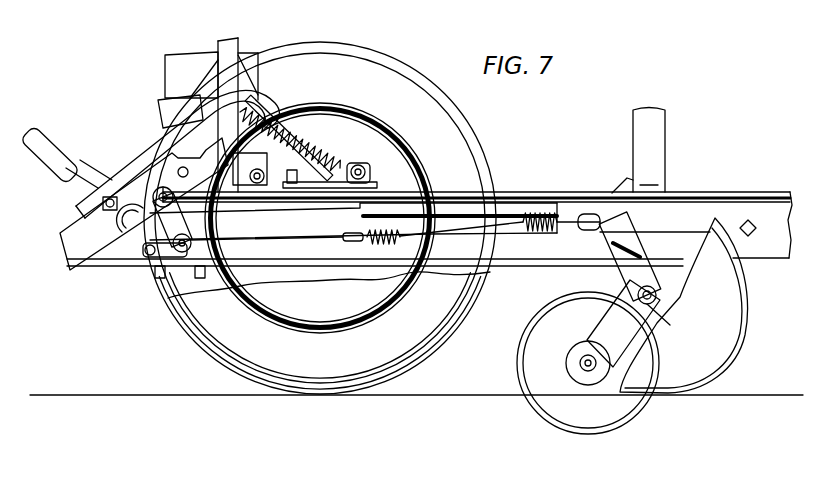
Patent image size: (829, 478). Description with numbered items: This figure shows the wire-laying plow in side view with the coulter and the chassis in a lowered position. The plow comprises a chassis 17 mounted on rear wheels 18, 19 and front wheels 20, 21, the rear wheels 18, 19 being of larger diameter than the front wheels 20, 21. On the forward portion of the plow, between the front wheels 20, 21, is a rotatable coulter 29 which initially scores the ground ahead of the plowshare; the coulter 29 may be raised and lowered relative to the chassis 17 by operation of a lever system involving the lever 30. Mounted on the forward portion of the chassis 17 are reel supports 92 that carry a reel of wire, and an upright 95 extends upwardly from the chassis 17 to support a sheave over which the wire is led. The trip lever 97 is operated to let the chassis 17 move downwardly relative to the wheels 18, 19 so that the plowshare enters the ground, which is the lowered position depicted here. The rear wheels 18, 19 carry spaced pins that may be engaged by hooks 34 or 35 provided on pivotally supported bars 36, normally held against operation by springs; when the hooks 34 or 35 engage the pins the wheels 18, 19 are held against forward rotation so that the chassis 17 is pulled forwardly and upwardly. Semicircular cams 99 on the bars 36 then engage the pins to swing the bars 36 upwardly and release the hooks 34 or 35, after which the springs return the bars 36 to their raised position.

The chassis 17 is at (293, 280).
The rear wheel 18 is at (440, 320).
The rear wheel 19 is at (463, 166).
The front wheel 20 is at (695, 387).
The front wheel 21 is at (560, 285).
The coulter 29 is at (572, 428).
The lever 30 is at (50, 157).
The hook 34 is at (193, 150).
The hook 35 is at (263, 110).
The bar 36 is at (147, 163).
The reel support 92 is at (660, 127).
The upright 95 is at (175, 66).
The trip lever 97 is at (230, 48).
The semicircular cam 99 is at (120, 233).